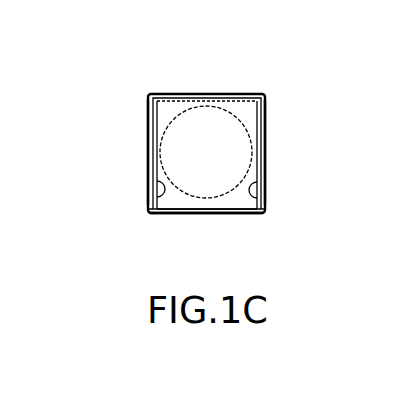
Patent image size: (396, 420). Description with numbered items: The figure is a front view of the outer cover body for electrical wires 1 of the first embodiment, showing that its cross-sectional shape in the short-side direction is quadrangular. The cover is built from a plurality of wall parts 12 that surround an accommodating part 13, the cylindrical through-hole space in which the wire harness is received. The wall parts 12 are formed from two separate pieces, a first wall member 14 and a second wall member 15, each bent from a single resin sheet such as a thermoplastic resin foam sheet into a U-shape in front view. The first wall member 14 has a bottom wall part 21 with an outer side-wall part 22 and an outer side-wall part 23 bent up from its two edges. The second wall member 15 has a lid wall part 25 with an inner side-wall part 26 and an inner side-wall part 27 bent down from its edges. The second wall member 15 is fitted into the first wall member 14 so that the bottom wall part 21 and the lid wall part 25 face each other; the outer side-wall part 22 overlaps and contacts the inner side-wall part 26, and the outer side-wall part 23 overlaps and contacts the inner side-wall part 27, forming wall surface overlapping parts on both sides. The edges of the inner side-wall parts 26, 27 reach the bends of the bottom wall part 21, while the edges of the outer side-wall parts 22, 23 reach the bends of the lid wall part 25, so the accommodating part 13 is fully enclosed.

The outer cover body for electrical wires 1 is at (279, 88).
The wall parts 12 is at (255, 92).
The accommodating part 13 is at (205, 154).
The first wall member 14 is at (172, 214).
The second wall member 15 is at (173, 94).
The bottom wall part 21 is at (201, 215).
The outer side-wall part 22 is at (147, 153).
The outer side-wall part 23 is at (267, 152).
The lid wall part 25 is at (202, 94).
The inner side-wall part 26 is at (157, 197).
The inner side-wall part 27 is at (258, 198).